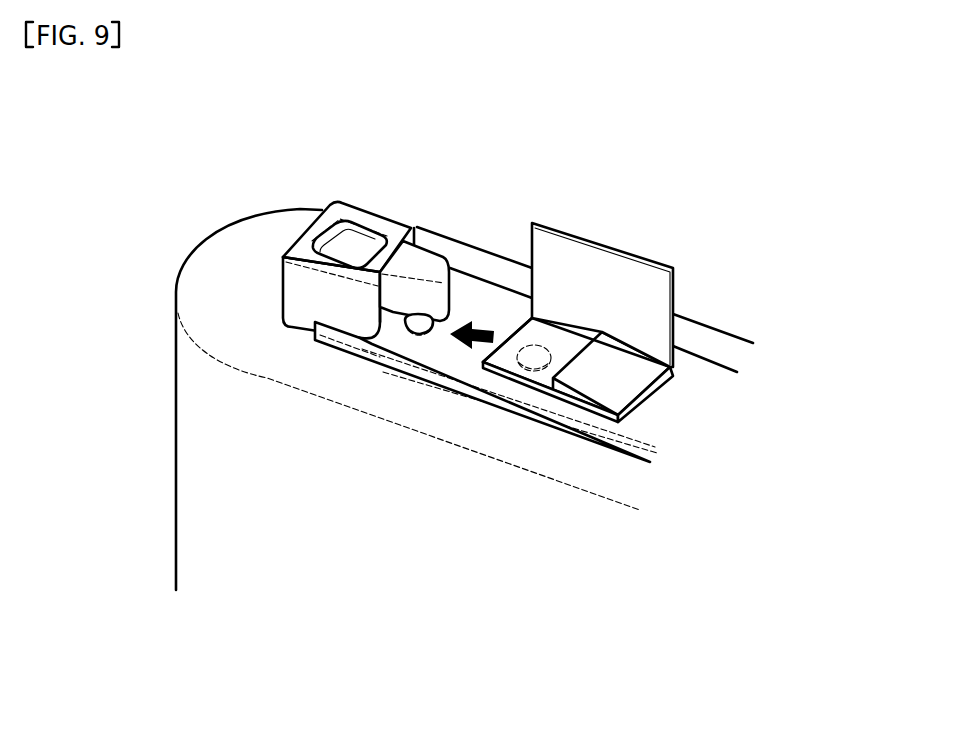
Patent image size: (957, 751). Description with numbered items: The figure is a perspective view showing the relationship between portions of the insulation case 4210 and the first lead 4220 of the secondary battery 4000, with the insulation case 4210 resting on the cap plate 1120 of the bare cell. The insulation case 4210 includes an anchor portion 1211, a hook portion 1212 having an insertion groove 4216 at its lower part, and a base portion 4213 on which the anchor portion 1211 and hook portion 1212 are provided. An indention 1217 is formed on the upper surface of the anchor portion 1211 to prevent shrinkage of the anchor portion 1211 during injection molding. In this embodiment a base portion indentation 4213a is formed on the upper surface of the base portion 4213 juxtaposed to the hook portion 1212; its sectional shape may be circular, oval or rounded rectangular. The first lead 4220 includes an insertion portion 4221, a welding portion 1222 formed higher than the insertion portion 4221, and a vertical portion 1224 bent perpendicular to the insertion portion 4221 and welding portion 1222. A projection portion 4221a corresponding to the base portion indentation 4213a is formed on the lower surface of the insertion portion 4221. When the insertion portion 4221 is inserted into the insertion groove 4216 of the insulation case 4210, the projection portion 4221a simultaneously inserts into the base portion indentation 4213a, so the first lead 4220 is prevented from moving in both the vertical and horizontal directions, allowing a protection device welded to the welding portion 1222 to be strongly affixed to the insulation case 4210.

The cap plate 1120 is at (217, 288).
The anchor portion 1211 is at (312, 233).
The hook portion 1212 is at (430, 262).
The indention 1217 is at (350, 233).
The welding portion 1222 is at (619, 375).
The vertical portion 1224 is at (590, 277).
The secondary battery 4000 is at (783, 163).
The insulation case 4210 is at (255, 247).
The base portion 4213 is at (640, 452).
The base portion indentation 4213a is at (406, 345).
The insertion groove 4216 is at (387, 331).
The first lead 4220 is at (593, 368).
The insertion portion 4221 is at (507, 362).
The projection portion 4221a is at (526, 372).